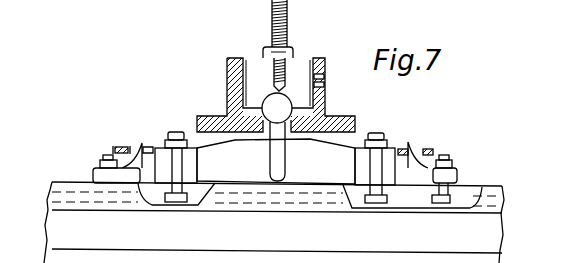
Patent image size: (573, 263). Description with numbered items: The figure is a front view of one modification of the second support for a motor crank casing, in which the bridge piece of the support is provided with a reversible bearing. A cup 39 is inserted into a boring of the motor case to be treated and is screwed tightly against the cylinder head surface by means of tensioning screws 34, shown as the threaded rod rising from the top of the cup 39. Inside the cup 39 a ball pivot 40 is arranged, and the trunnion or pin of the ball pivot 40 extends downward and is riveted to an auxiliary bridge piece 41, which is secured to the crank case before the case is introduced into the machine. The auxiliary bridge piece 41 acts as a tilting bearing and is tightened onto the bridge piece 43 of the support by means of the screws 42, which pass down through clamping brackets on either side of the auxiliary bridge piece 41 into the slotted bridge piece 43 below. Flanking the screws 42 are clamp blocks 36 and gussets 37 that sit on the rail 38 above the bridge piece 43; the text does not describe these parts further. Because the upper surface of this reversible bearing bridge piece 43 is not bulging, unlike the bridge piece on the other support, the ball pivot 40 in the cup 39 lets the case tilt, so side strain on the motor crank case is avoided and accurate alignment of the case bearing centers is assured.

The tensioning screw 34 is at (287, 25).
The clamp block 36 is at (457, 178).
The gusset with clamping pin 37 is at (430, 152).
The base rail 38 is at (463, 204).
The cup 39 is at (355, 124).
The ball pivot 40 is at (283, 106).
The auxiliary bridge piece 41 is at (276, 153).
The screws 42 is at (378, 166).
The bridge piece 43 is at (273, 236).